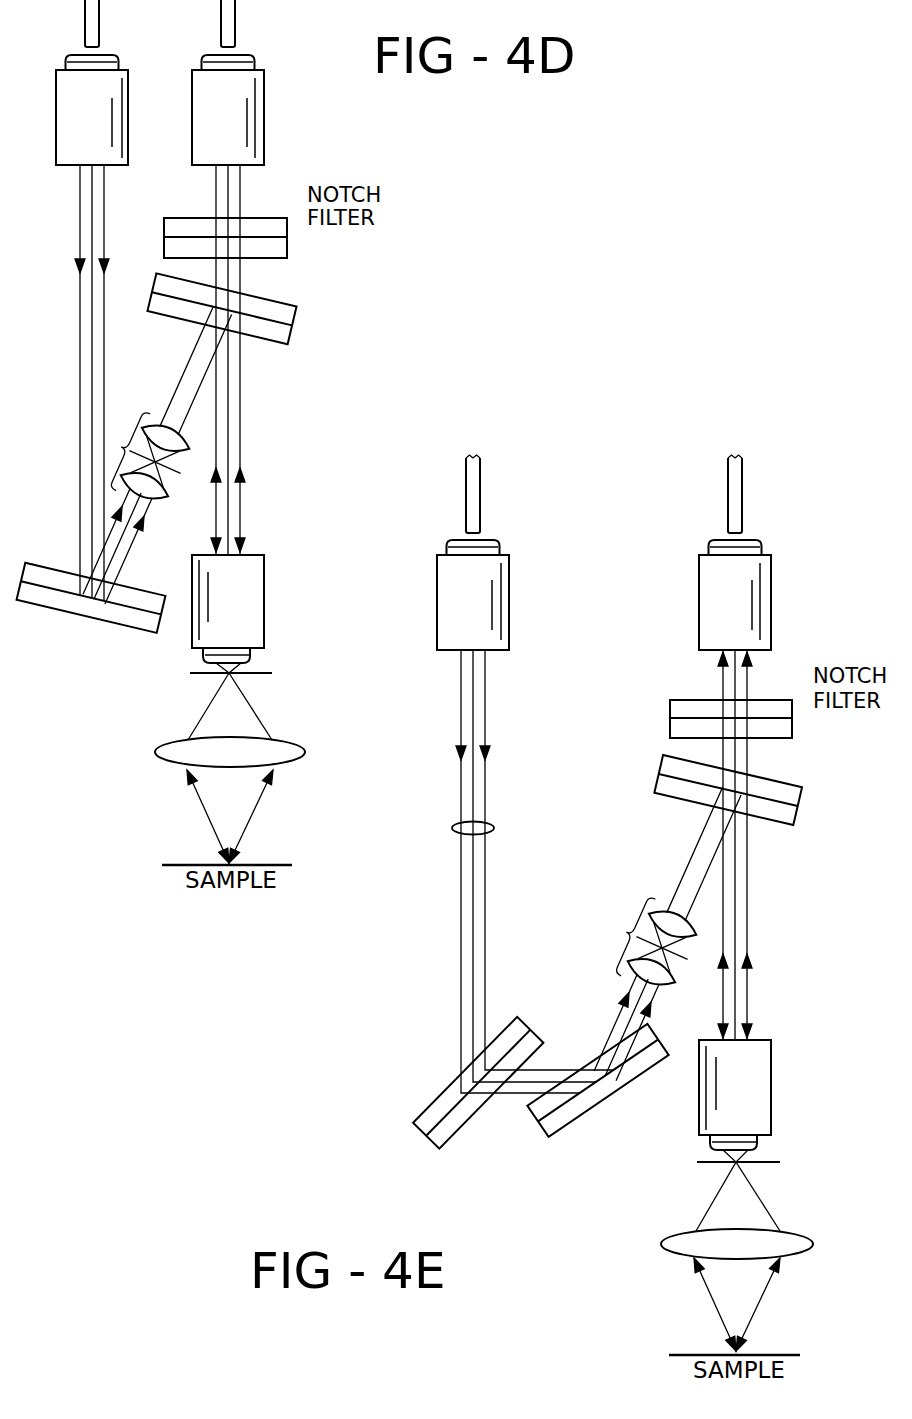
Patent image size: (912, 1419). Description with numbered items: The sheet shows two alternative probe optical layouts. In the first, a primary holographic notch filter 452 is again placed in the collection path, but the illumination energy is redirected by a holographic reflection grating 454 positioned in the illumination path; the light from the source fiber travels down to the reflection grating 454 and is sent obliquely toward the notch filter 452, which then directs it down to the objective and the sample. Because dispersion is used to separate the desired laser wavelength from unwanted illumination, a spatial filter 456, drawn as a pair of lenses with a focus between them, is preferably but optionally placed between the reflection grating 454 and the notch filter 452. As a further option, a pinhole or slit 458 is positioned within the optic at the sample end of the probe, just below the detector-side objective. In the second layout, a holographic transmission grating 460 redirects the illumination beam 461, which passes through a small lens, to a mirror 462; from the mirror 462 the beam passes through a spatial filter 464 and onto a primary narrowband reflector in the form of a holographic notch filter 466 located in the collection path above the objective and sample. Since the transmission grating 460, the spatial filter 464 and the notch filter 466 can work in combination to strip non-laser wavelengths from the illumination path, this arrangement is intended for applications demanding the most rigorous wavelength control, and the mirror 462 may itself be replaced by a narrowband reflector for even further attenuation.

In FIG. 4D, the primary holographic notch filter 452 is at (292, 322).
In FIG. 4D, the holographic reflection grating 454 is at (35, 601).
In FIG. 4D, the spatial filter 456 is at (125, 447).
In FIG. 4D, the pinhole or slit 458 is at (262, 678).
In FIG. 4E, the holographic transmission grating 460 is at (428, 1107).
In FIG. 4E, the illumination beam 461 is at (494, 829).
In FIG. 4E, the mirror 462 is at (582, 1118).
In FIG. 4E, the spatial filter 464 is at (628, 930).
In FIG. 4E, the holographic notch filter 466 is at (798, 804).